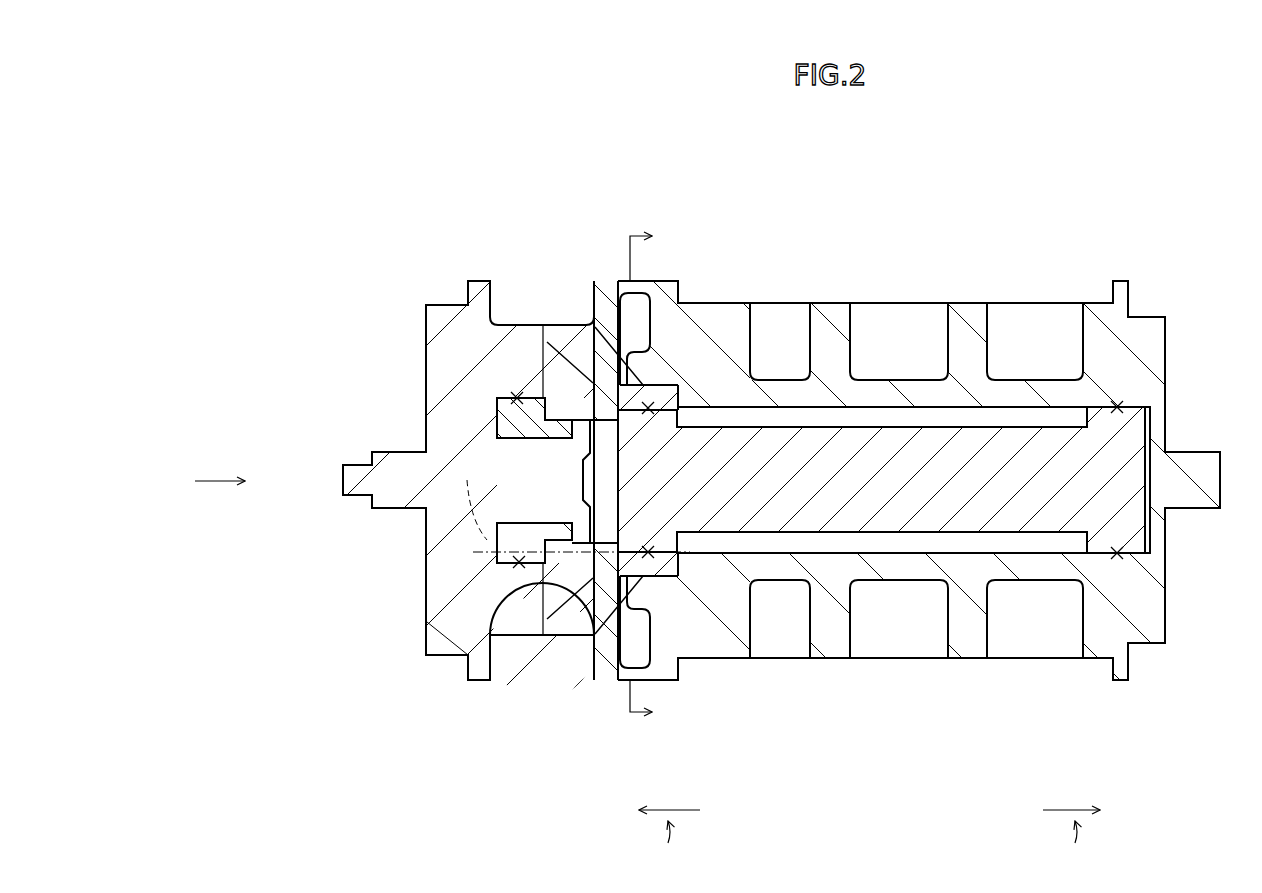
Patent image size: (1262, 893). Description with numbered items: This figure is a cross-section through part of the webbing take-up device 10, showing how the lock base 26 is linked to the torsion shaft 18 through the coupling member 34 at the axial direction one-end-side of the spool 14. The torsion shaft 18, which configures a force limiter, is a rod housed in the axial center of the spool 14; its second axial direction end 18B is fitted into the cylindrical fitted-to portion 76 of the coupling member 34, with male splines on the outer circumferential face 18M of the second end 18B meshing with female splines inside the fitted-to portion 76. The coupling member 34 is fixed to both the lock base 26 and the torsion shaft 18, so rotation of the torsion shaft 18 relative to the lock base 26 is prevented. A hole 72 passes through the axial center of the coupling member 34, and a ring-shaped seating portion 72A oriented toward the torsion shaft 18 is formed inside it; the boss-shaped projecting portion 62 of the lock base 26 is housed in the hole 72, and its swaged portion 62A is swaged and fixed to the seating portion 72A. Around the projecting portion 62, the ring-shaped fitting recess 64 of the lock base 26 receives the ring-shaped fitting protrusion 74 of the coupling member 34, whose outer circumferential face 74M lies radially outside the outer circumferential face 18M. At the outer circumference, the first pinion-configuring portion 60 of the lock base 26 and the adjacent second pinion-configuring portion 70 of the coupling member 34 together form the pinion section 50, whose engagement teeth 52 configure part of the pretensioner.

The webbing take-up device 10 is at (1200, 166).
The spool 14 is at (836, 300).
The torsion shaft 18 is at (897, 542).
The second axial direction end 18B is at (656, 400).
The outer circumferential face 18M is at (690, 568).
The lock base 26 is at (433, 684).
The coupling member 34 is at (605, 686).
The pinion section 50 is at (534, 446).
The engagement teeth 52 is at (530, 318).
The first pinion-configuring portion 60 is at (508, 634).
The projecting portion 62 is at (536, 436).
The swaged portion 62A is at (584, 412).
The fitting recess 64 is at (520, 398).
The second pinion-configuring portion 70 is at (565, 634).
The hole 72 is at (547, 430).
The seating portion 72A is at (564, 446).
The fitting protrusion 74 is at (514, 396).
The outer circumferential face 74M is at (505, 556).
The fitted-to portion 76 is at (646, 381).